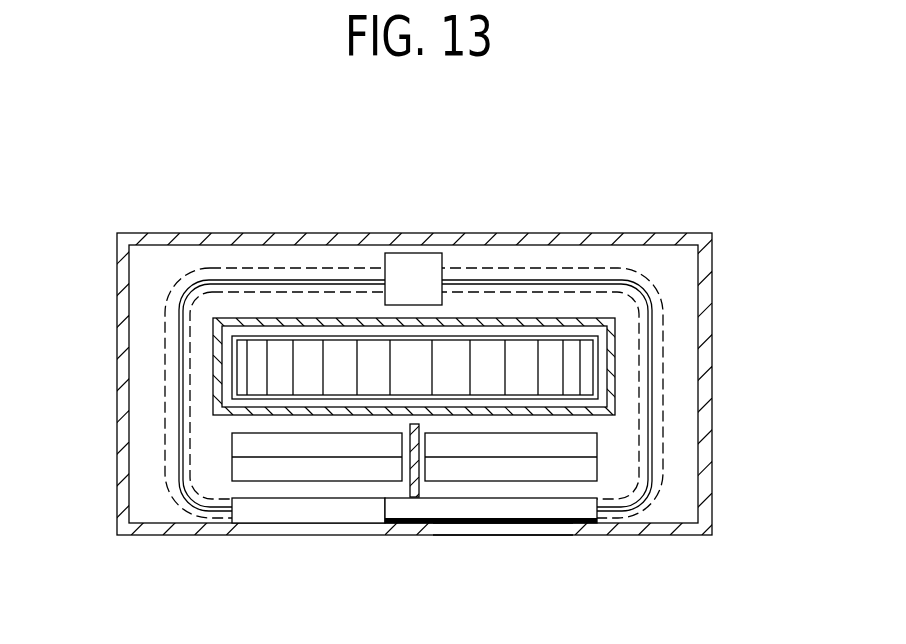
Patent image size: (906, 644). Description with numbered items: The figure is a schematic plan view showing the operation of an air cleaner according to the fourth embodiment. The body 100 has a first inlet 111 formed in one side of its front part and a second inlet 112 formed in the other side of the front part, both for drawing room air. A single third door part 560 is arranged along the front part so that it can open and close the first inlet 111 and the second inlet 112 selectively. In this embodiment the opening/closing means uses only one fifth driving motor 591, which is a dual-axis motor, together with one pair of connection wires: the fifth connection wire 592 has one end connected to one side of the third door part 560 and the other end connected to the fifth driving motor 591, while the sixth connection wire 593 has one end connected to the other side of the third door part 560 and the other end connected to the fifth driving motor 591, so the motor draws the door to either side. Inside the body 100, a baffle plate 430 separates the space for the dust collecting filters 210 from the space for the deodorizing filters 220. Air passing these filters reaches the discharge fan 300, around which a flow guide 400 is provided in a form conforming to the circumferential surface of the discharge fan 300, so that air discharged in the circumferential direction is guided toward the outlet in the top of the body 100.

The body 100 is at (613, 238).
The first inlet 111 is at (316, 527).
The second inlet 112 is at (497, 527).
The dust collecting filters 210 is at (238, 443).
The deodorizing filters 220 is at (592, 445).
The discharge fan 300 is at (583, 378).
The flow guide 400 is at (613, 338).
The baffle plate 430 is at (413, 481).
The third door part 560 is at (563, 507).
The fifth driving motor 591 is at (417, 270).
The fifth connection wire 592 is at (302, 280).
The sixth connection wire 593 is at (518, 284).